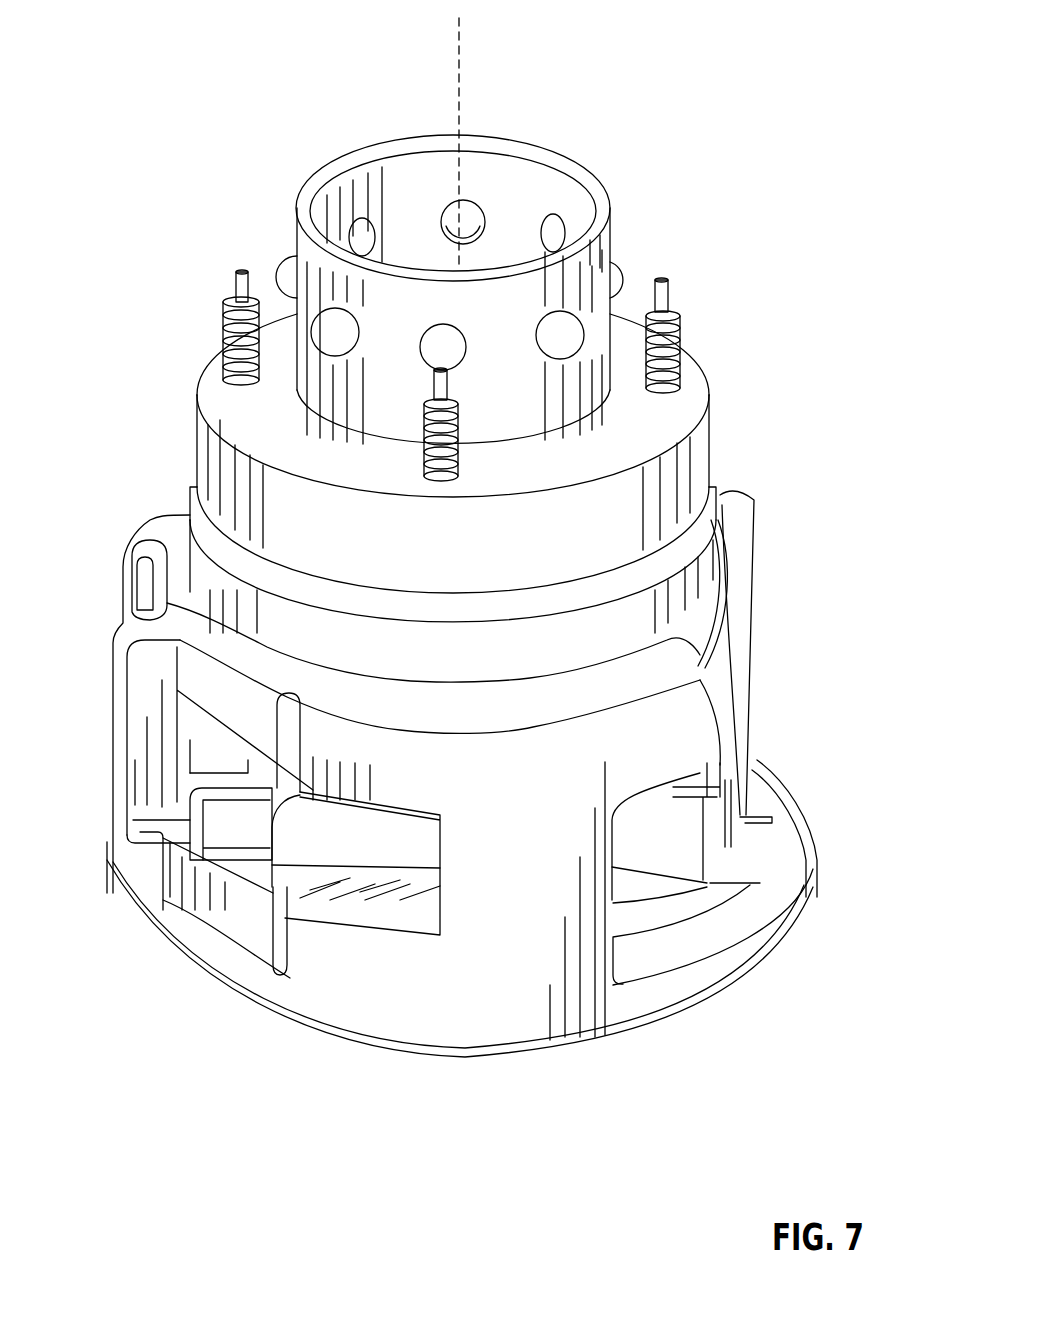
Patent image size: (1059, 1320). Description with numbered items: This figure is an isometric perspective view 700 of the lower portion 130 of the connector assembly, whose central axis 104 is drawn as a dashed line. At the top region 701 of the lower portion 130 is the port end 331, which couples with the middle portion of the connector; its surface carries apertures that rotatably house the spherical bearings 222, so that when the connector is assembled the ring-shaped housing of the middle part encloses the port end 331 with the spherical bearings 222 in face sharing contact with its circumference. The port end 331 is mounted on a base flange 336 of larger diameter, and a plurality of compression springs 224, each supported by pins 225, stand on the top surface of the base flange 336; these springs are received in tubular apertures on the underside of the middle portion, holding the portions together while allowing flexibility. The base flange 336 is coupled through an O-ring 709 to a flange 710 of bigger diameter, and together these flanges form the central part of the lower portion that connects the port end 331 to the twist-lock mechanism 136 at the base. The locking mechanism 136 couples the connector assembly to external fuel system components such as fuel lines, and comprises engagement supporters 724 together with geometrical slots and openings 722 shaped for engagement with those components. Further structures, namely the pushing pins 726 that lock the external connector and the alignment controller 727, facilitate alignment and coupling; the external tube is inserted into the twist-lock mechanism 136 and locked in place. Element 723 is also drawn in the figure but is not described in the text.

The isometric perspective view 700 is at (740, 48).
The lower portion 130 is at (740, 87).
The central axis 104 is at (460, 88).
The top region 701 is at (585, 148).
The spherical bearings 222 is at (290, 257).
The port end 331 is at (612, 233).
The pins 225 is at (680, 285).
The compression springs 224 is at (683, 337).
The base flange 336 is at (708, 428).
The O-ring 709 is at (711, 490).
The flange 710 is at (712, 563).
The alignment controller 727 is at (124, 576).
The twist-lock mechanism 136 is at (757, 756).
The pushing pins 726 is at (770, 818).
The geometrical slots and openings 722 is at (661, 858).
The tab 723 is at (330, 848).
The engagement supporters 724 is at (220, 830).